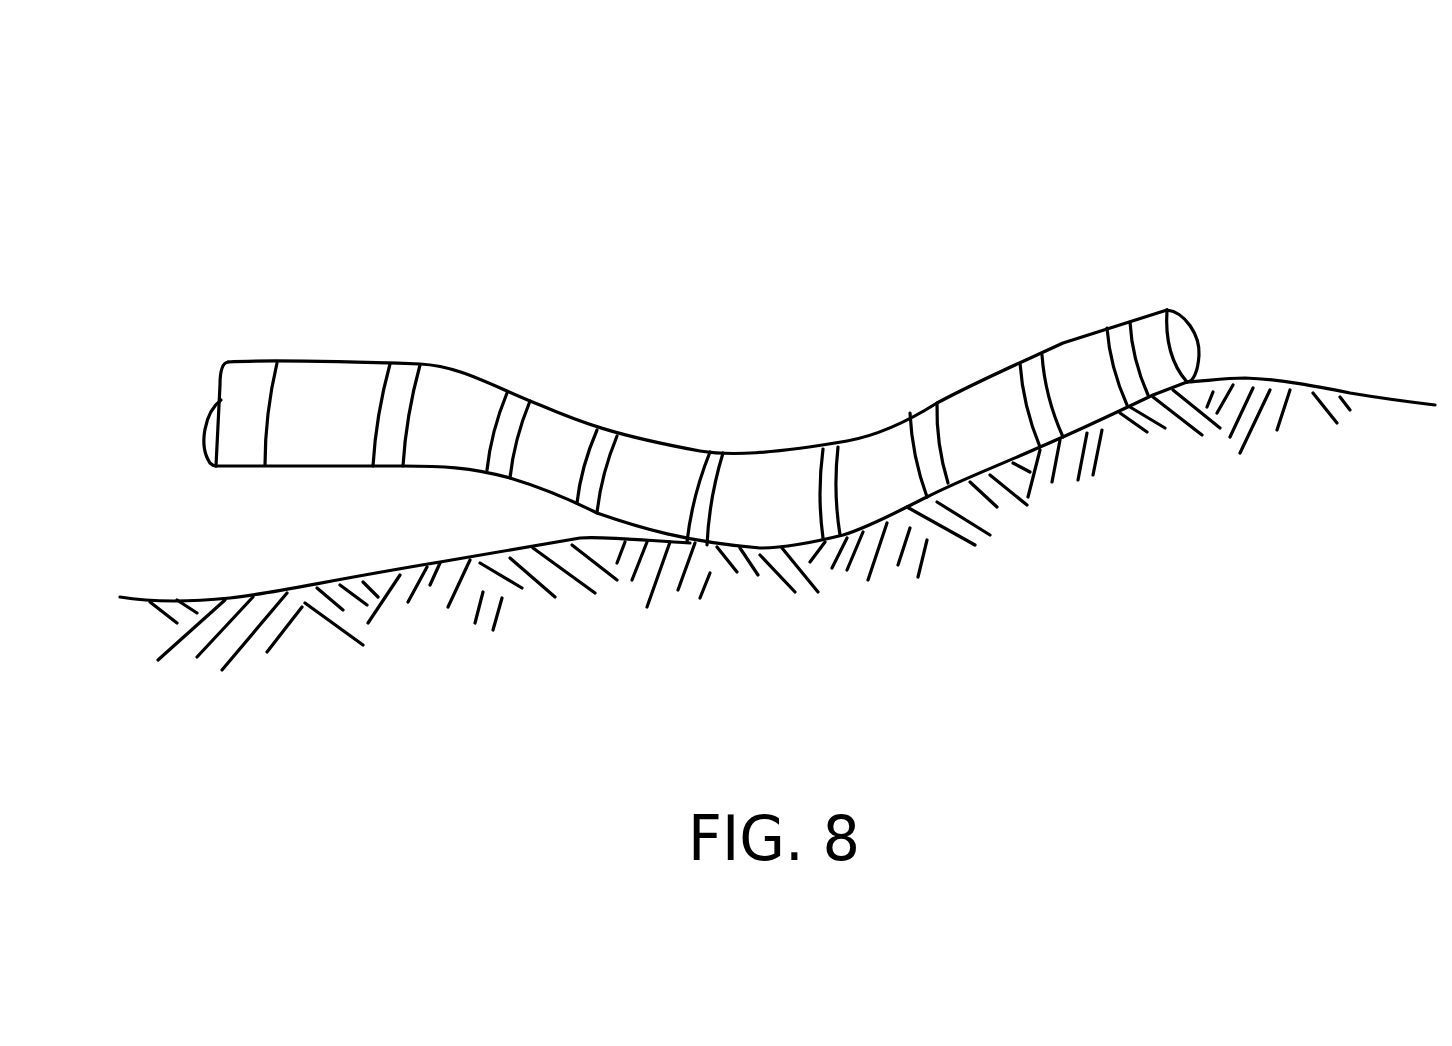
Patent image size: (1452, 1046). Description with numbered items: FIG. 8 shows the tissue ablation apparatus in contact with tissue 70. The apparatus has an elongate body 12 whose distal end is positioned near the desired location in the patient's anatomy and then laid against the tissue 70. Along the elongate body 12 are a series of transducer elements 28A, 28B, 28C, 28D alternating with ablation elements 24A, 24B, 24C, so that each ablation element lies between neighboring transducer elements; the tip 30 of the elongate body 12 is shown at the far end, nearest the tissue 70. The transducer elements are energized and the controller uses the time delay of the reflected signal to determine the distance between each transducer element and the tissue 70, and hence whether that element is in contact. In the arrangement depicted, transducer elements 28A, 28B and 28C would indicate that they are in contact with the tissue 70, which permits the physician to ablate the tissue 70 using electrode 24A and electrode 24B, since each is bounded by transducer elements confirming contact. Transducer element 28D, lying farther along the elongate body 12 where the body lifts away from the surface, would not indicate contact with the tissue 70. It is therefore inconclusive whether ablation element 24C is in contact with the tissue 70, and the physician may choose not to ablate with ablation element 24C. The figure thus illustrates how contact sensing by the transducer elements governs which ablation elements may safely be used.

The elongate body 12 is at (643, 172).
The transducer element 28D is at (551, 432).
The ablation element 24C is at (635, 457).
The transducer element 28C is at (750, 468).
The electrode 24B is at (864, 454).
The transducer element 28B is at (971, 404).
The electrode 24A is at (1068, 360).
The transducer element 28A is at (1143, 333).
The end cap / nose 30 is at (1182, 343).
The tissue 70 is at (1150, 568).